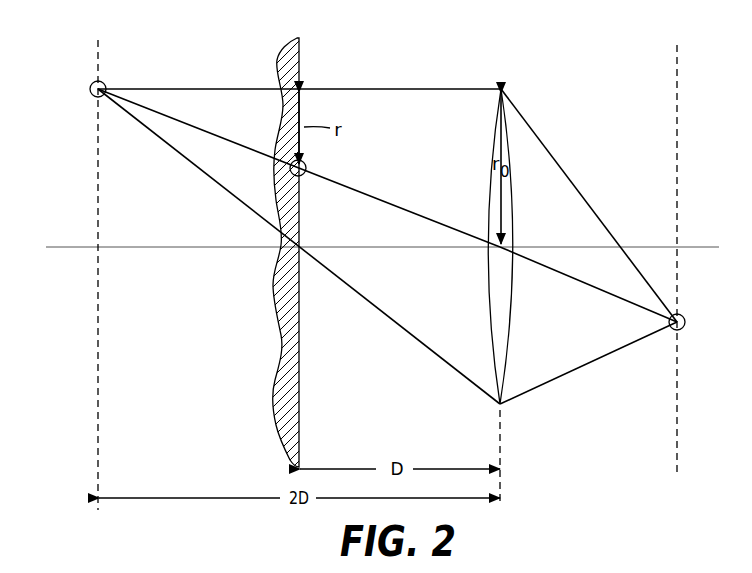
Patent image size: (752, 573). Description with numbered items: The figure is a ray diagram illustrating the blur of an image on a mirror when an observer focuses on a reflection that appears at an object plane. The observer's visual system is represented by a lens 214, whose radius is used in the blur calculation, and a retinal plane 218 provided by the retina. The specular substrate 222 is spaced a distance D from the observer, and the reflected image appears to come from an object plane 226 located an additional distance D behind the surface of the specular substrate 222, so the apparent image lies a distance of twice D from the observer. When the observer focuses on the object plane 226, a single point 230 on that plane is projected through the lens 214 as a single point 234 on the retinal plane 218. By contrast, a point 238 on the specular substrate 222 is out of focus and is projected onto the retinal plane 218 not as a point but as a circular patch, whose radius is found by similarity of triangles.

The lens 214 is at (511, 153).
The retinal plane 218 is at (677, 175).
The specular substrate 222 is at (300, 383).
The object plane 226 is at (97, 186).
The point on the object plane 230 is at (89, 84).
The point on the retinal plane 234 is at (672, 330).
The point on the specular substrate 238 is at (308, 165).